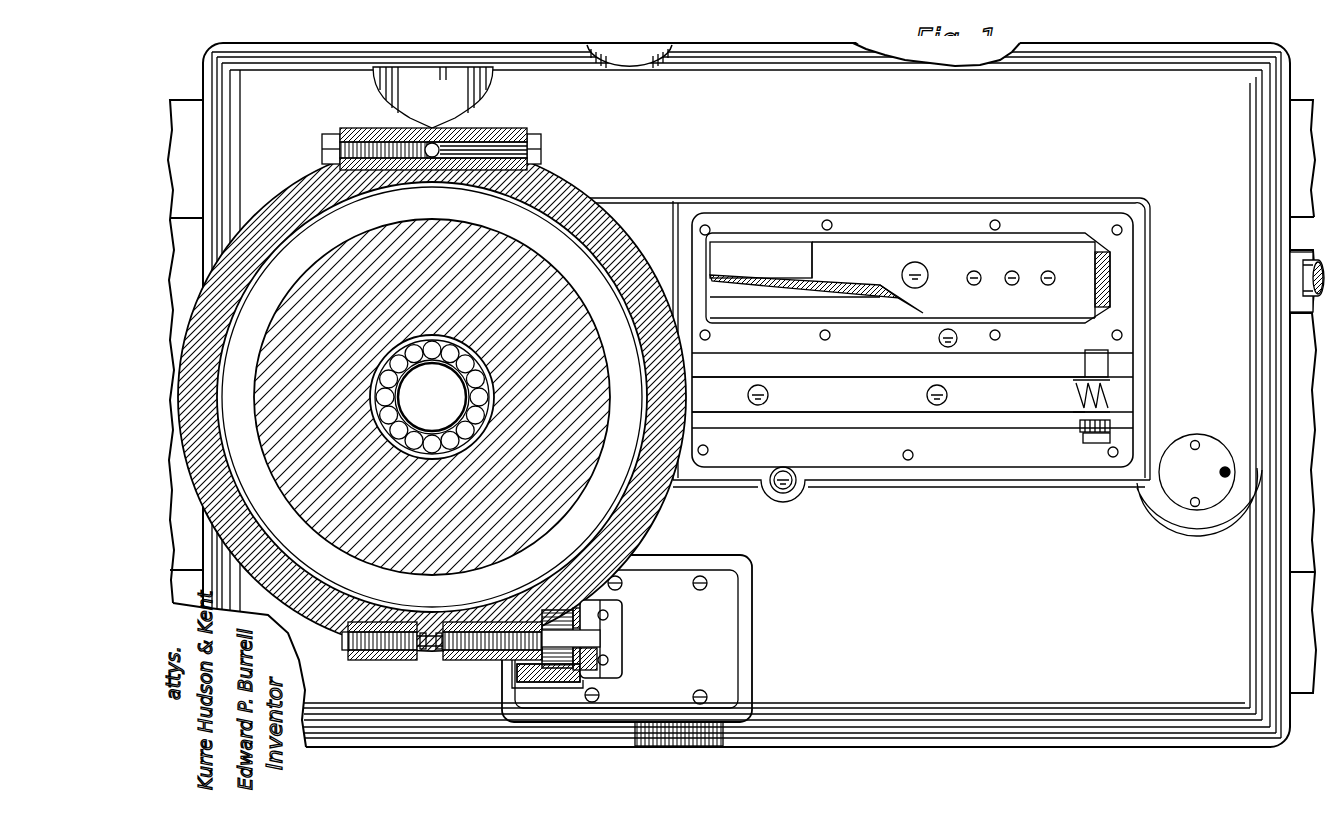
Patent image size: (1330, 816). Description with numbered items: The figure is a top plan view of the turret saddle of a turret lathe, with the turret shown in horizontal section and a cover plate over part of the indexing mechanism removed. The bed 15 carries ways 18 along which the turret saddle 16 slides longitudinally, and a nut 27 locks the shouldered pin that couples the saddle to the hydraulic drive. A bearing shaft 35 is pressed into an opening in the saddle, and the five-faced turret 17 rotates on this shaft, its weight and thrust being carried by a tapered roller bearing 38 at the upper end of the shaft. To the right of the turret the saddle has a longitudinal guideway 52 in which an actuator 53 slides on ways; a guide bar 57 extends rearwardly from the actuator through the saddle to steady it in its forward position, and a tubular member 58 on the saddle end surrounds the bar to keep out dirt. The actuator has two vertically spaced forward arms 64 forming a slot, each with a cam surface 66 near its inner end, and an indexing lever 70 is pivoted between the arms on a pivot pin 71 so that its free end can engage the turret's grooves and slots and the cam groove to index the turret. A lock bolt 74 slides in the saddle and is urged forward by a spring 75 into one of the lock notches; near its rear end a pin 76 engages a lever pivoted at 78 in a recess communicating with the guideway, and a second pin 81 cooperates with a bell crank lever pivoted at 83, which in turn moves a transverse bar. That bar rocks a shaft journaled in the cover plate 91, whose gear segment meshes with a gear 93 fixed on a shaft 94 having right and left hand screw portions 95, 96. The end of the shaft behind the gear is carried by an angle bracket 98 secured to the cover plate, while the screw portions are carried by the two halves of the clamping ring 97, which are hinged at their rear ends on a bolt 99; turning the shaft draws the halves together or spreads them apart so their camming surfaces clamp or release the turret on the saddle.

The bed 15 is at (176, 476).
The turret saddle 16 is at (1125, 63).
The turret 17 is at (543, 265).
The ways 18 is at (1300, 100).
The nut 27 is at (1172, 490).
The bearing shaft 35 is at (432, 397).
The tapered roller bearing 38 is at (397, 368).
The guideway 52 is at (1027, 247).
The actuator 53 is at (950, 250).
The guide bar 57 is at (1305, 274).
The tubular member 58 is at (1295, 296).
The arms 64 is at (856, 248).
The cam surface 66 is at (912, 303).
The indexing lever 70 is at (750, 255).
The pivot pin 71 is at (919, 282).
The lock bolt 74 is at (820, 400).
The spring 75 is at (1110, 395).
The pin 76 is at (947, 396).
The pivot 78 is at (957, 338).
The second pin 81 is at (748, 396).
The pivot 83 is at (780, 486).
The cover plate 91 is at (722, 608).
The gear 93 is at (600, 651).
The shaft 94 is at (598, 640).
The screw portion 95 is at (473, 652).
The screw portion 96 is at (378, 660).
The clamping ring 97 is at (340, 617).
The angle bracket 98 is at (612, 672).
The bolt 99 is at (482, 147).